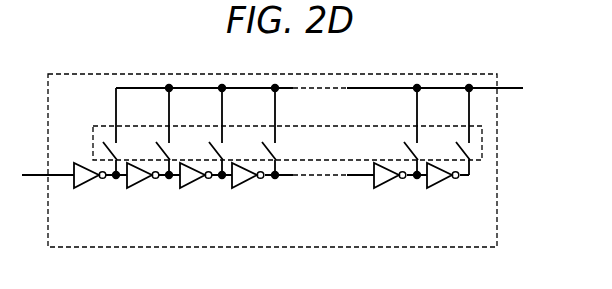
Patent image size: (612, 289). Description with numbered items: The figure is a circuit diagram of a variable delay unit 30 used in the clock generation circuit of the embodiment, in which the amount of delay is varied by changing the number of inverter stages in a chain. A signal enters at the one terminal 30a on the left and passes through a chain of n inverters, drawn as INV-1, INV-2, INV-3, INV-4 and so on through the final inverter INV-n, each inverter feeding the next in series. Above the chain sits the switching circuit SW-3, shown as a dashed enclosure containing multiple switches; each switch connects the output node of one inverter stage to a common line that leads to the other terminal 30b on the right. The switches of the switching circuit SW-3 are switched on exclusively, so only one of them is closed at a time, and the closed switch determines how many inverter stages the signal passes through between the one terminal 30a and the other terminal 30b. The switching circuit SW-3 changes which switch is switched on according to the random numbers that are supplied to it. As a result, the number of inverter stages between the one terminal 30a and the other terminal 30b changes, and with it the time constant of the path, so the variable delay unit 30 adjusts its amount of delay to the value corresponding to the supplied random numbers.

The variable delay unit 30 is at (497, 232).
The one terminal 30a is at (33, 183).
The other terminal 30b is at (517, 97).
The switching circuit SW-3 is at (482, 142).
The inverter INV-1 is at (88, 185).
The inverter INV-2 is at (137, 182).
The inverter INV-3 is at (194, 178).
The inverter INV-4 is at (245, 178).
The inverter INV-n is at (440, 180).